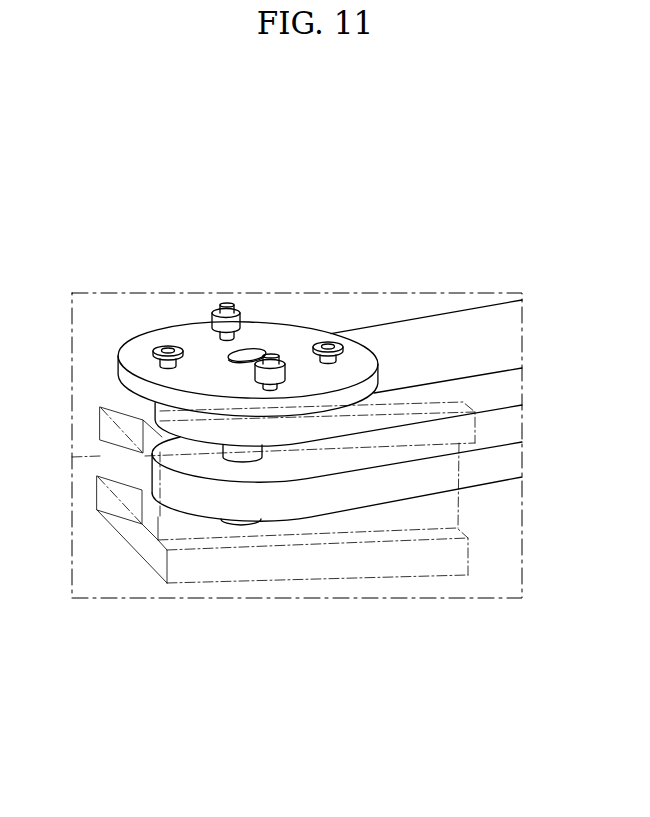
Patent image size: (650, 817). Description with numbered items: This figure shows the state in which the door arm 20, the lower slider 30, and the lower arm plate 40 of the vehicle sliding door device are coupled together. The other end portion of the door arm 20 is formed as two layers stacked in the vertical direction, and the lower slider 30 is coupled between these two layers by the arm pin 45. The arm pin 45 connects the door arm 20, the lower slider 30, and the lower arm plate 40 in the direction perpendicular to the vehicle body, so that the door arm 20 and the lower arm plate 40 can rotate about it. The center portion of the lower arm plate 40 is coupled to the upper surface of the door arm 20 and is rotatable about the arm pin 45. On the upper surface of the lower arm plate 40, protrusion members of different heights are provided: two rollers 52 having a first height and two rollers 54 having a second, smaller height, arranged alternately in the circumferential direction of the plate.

The door arm 20 is at (456, 330).
The lower slider 30 is at (350, 560).
The lower arm plate 40 is at (130, 345).
The arm pin 45 is at (252, 350).
The rollers having a first height 52 is at (158, 349).
The rollers having a second height 54 is at (218, 306).